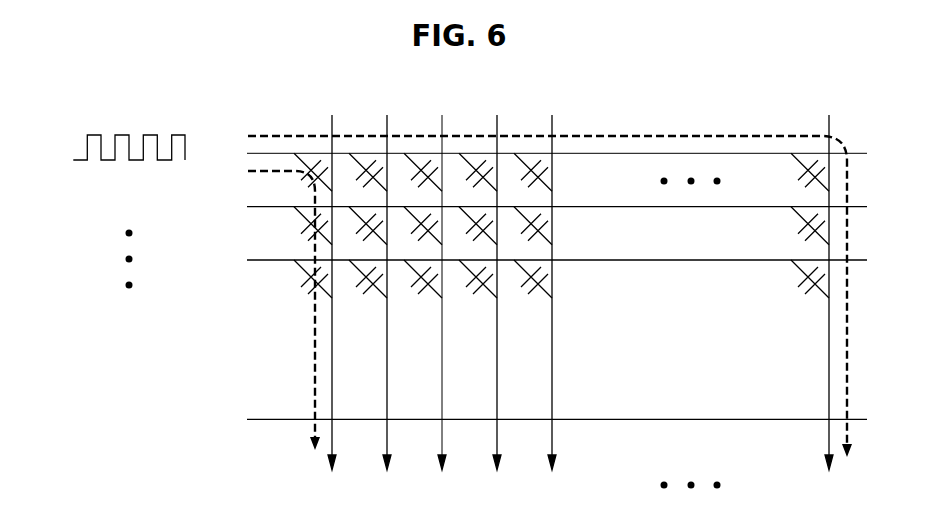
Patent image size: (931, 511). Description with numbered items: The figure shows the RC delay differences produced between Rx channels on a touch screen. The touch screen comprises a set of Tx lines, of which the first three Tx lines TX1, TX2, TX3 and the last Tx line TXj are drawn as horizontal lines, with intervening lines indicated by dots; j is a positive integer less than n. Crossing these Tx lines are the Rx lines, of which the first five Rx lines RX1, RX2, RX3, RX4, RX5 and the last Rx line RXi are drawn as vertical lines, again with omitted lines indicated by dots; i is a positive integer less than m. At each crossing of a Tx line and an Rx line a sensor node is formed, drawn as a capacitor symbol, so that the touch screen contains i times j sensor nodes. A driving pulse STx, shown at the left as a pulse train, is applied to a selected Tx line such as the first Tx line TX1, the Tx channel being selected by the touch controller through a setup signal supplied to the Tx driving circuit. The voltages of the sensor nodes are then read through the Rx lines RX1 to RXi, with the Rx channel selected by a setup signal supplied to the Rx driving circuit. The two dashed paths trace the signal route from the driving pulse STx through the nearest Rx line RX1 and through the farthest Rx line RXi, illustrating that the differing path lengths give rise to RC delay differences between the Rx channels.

The driving pulse STx is at (113, 148).
The Tx line TX1 is at (538, 154).
The Tx line TX2 is at (538, 208).
The Tx line TX3 is at (538, 261).
The Tx line TXj is at (538, 419).
The Rx line RX1 is at (332, 306).
The Rx line RX2 is at (387, 306).
The Rx line RX3 is at (442, 306).
The Rx line RX4 is at (497, 306).
The Rx line RX5 is at (552, 306).
The Rx line RXi is at (829, 306).